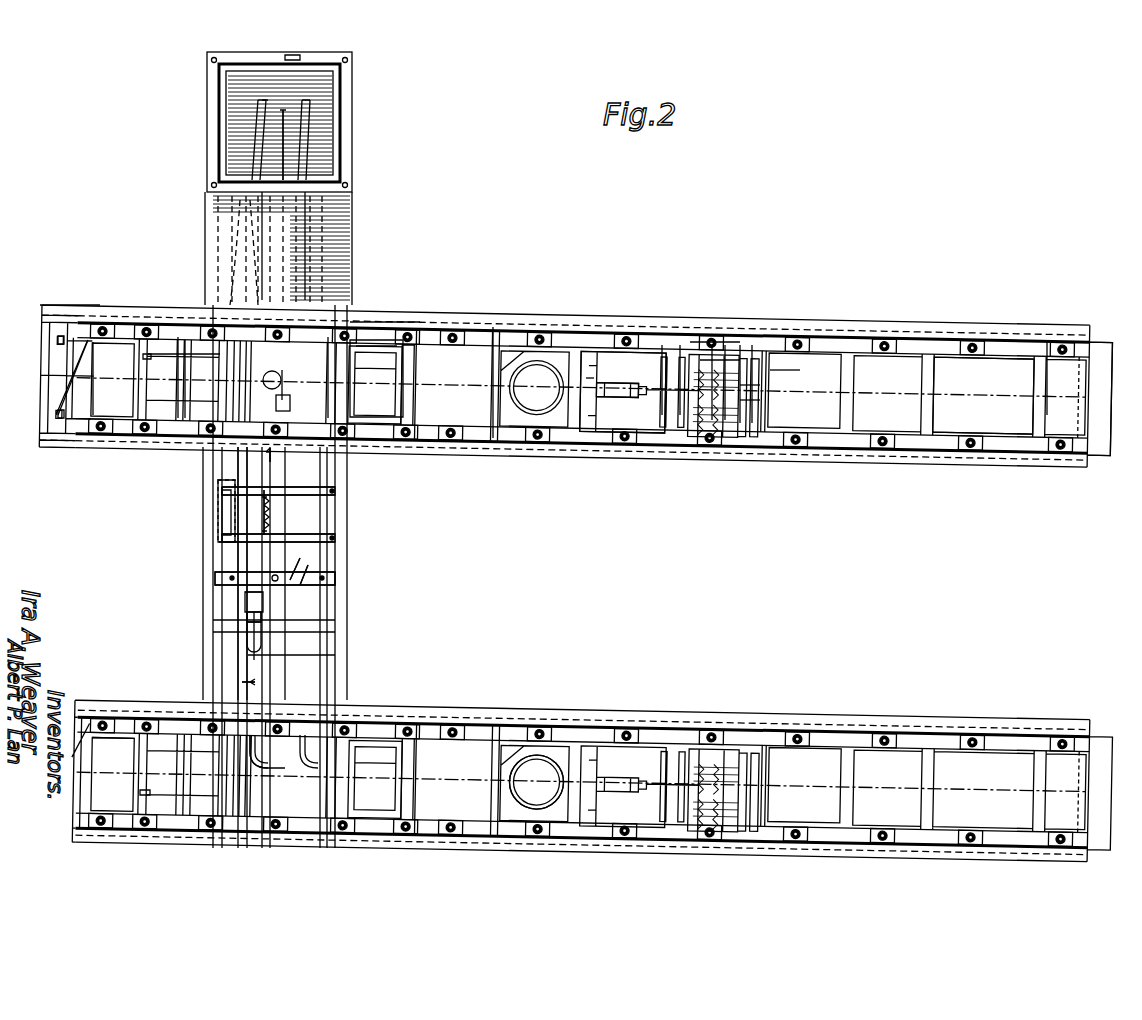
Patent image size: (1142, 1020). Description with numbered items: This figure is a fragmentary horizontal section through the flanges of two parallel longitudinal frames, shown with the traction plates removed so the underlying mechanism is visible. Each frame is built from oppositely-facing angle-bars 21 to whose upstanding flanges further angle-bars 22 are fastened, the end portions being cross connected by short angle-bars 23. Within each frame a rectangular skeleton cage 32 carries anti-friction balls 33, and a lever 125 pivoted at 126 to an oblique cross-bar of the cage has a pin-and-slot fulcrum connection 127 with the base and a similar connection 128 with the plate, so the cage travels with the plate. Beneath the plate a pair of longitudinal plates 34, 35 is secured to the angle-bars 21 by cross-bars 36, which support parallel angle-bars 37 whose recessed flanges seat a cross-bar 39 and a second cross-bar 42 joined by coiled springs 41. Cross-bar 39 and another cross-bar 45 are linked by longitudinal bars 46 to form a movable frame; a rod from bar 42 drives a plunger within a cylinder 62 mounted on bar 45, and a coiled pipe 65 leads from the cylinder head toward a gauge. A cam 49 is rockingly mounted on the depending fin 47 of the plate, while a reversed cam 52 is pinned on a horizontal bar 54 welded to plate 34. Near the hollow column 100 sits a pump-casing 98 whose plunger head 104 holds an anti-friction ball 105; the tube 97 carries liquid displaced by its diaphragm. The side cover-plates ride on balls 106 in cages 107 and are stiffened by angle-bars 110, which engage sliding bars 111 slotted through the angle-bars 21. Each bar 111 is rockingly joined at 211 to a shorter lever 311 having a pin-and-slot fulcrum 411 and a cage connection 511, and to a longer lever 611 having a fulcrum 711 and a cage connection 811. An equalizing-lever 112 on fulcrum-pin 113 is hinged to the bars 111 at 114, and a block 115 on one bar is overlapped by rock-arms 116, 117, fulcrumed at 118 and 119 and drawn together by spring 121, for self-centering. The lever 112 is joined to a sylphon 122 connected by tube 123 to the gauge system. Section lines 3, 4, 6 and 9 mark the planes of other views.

The shaft 3 is at (590, 385).
The pin 4 is at (795, 372).
The section line 6 is at (250, 684).
The section line 9 is at (272, 458).
The angle-bar 21 is at (130, 340).
The angle-bar 22 is at (108, 315).
The short angle-bar 23 is at (1105, 402).
The ball-bearing skeleton frame or cage 32 is at (1012, 358).
The anti-friction ball 33 is at (102, 340).
The longitudinal plate 34 is at (770, 392).
The longitudinal plate 35 is at (755, 400).
The cross-bar 36 is at (682, 370).
The angle-bar 37 is at (680, 345).
The cross-bar 39 is at (745, 392).
The coiled spring 41 is at (718, 345).
The cross-bar 42 is at (665, 745).
The cross-bar 45 is at (548, 790).
The longitudinal bar 46 is at (615, 440).
The fin 47 is at (722, 435).
The cam 49 is at (742, 432).
The cam 52 is at (708, 340).
The horizontal bar 54 is at (735, 345).
The cylinder 62 is at (622, 392).
The coiled pipe 65 is at (268, 102).
The tube or pipe 97 is at (280, 128).
The pump-casing 98 is at (286, 403).
The hollow column or standard 100 is at (340, 123).
The plunger head 104 is at (282, 375).
The anti-friction ball 105 is at (285, 392).
The anti-friction ball 106 is at (180, 435).
The cage 107 is at (365, 435).
The angle-bar 110 is at (375, 320).
The bar 111 is at (225, 455).
The equalizing-lever 112 is at (292, 575).
The fulcrum-pin 113 is at (288, 565).
The hinge connection 114 is at (215, 578).
The block 115 is at (220, 509).
The rock-arm 116 is at (312, 532).
The rock-arm 117 is at (308, 492).
The fulcrum 118 is at (335, 538).
The fulcrum 119 is at (335, 491).
The coiled contractile spring 121 is at (270, 512).
The sylphon 122 is at (247, 617).
The tube 123 is at (258, 108).
The lever 125 is at (70, 410).
The pivot 126 is at (58, 340).
The pin-and-slot fulcrum connection 127 is at (60, 340).
The pin-and-slot connection 128 is at (58, 415).
The rocking connection 211 is at (205, 380).
The shorter lever 311 is at (190, 340).
The pin-and-slot fulcrum connection 411 is at (143, 358).
The rocking connection 511 is at (185, 340).
The longer lever 611 is at (370, 375).
The pin-and-slot fulcrum connection 711 is at (430, 350).
The rocking connection 811 is at (340, 360).